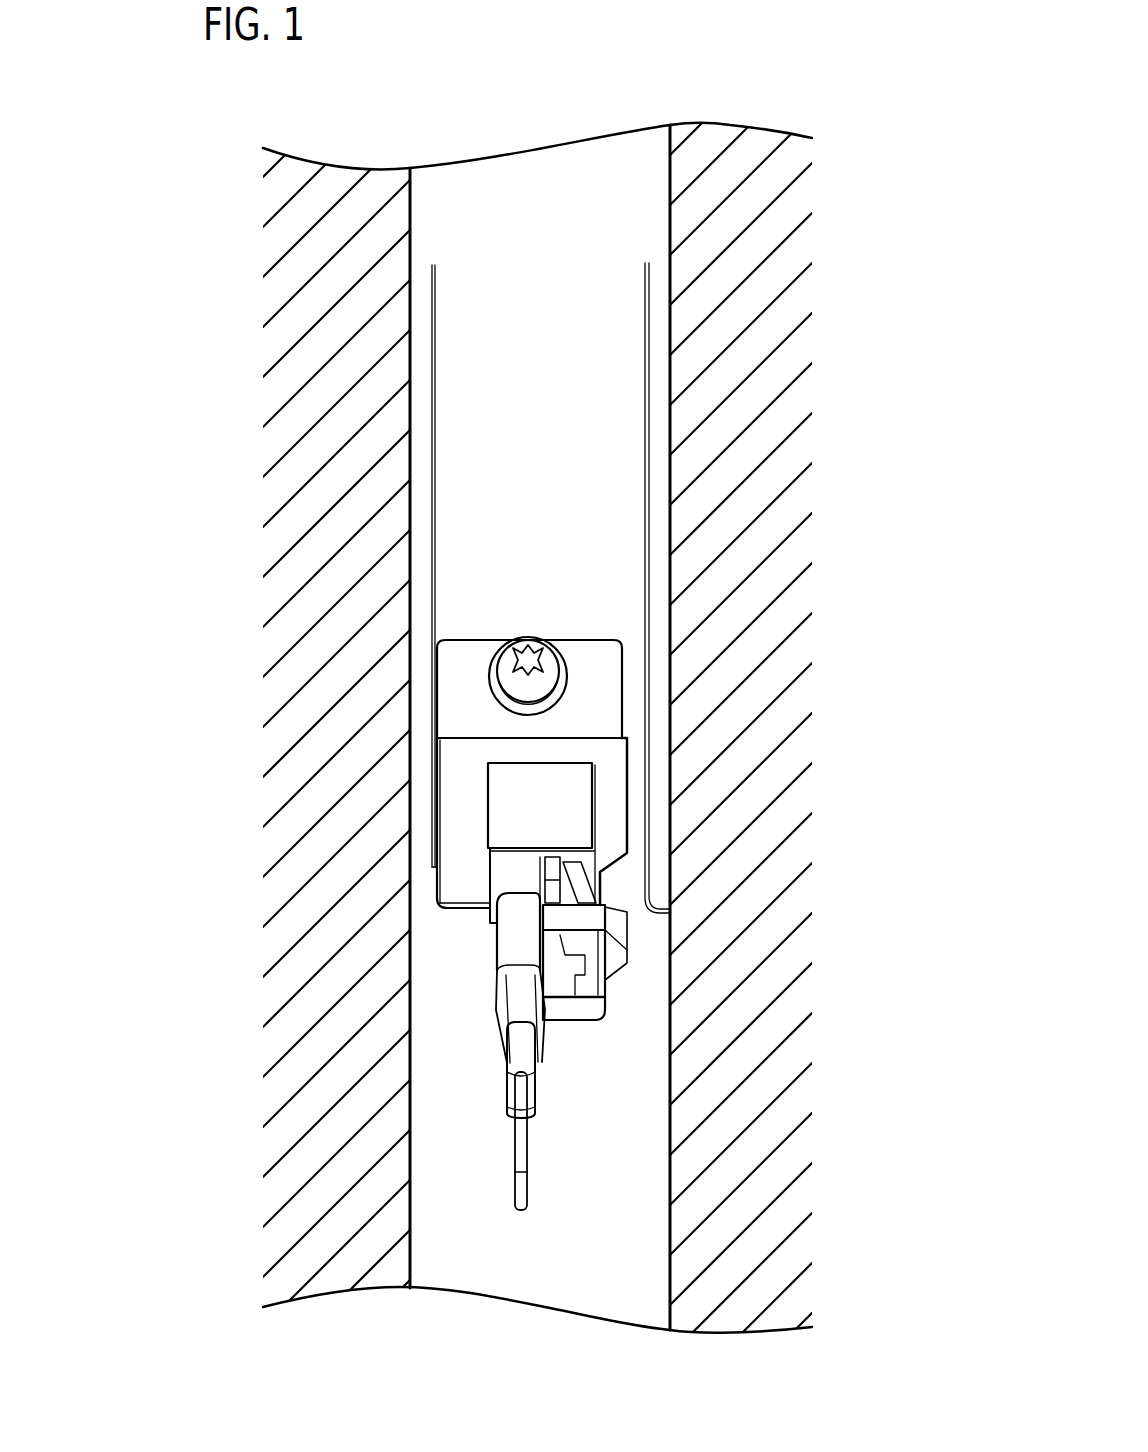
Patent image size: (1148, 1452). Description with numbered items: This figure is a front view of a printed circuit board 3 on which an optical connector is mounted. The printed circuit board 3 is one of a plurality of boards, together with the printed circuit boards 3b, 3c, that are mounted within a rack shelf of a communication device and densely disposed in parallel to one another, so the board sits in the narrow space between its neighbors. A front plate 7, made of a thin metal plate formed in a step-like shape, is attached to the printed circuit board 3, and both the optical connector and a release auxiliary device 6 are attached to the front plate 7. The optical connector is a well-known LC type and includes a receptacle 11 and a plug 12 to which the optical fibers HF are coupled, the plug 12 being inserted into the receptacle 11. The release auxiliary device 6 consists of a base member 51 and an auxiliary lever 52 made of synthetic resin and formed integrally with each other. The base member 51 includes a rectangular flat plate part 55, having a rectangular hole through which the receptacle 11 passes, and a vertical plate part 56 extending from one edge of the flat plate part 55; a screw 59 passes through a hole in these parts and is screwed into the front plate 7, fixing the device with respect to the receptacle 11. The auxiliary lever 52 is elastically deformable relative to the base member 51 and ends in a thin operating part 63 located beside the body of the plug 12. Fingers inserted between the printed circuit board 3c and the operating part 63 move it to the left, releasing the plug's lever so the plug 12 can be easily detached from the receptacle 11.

The printed circuit board 3 is at (532, 158).
The printed circuit board 3b is at (378, 185).
The printed circuit board 3c is at (730, 130).
The front plate 7 is at (630, 385).
The base member 51 is at (359, 774).
The vertical plate part 56 is at (455, 692).
The flat plate part 55 is at (460, 762).
The screw 59 is at (545, 680).
The auxiliary lever 52 is at (617, 838).
The receptacle 11 is at (515, 872).
The release auxiliary device 6 is at (615, 895).
The plug 12 is at (522, 943).
The operating part 63 is at (543, 960).
The optical fibers HF is at (523, 1152).